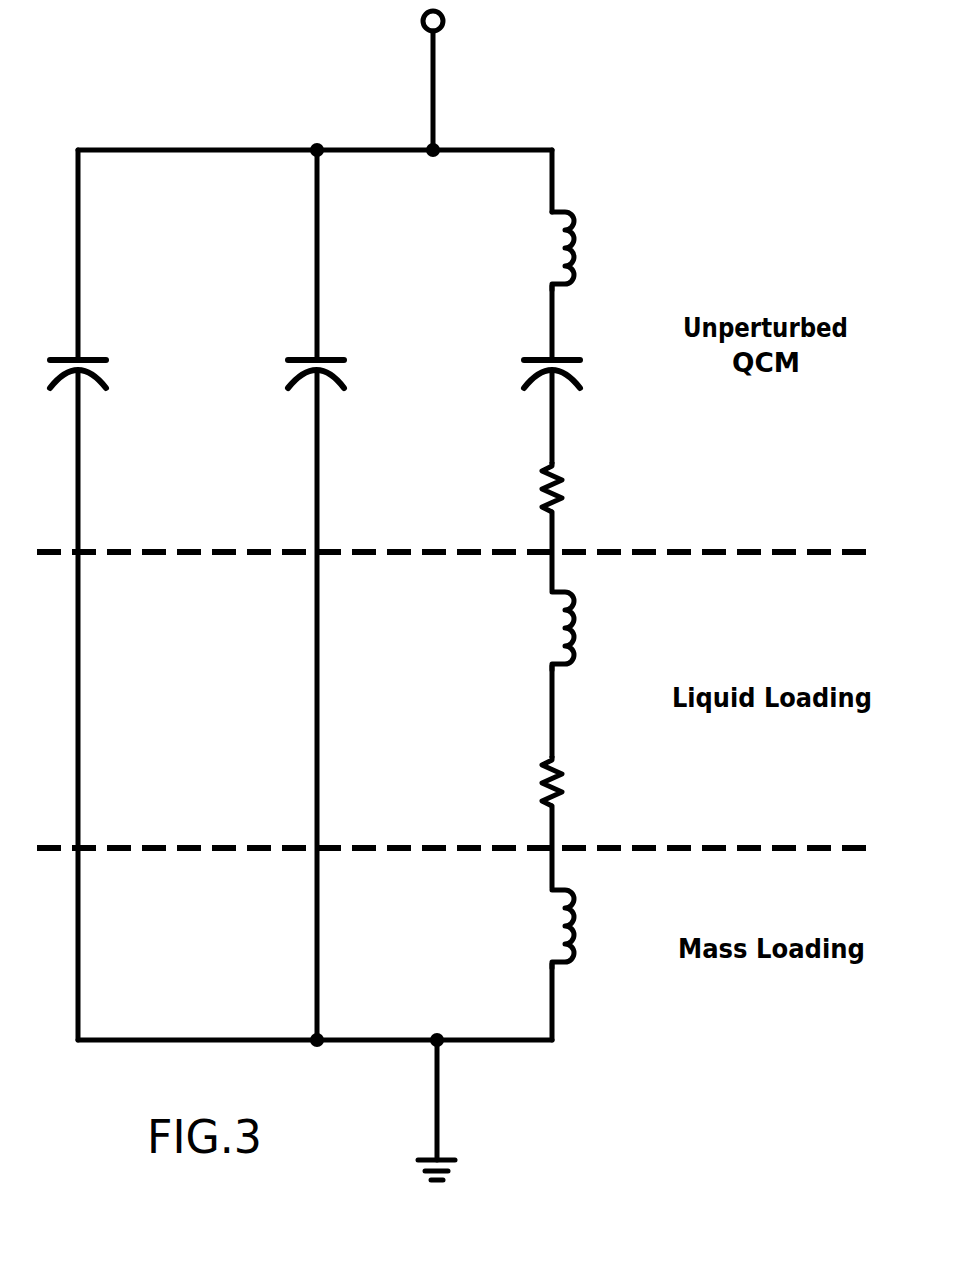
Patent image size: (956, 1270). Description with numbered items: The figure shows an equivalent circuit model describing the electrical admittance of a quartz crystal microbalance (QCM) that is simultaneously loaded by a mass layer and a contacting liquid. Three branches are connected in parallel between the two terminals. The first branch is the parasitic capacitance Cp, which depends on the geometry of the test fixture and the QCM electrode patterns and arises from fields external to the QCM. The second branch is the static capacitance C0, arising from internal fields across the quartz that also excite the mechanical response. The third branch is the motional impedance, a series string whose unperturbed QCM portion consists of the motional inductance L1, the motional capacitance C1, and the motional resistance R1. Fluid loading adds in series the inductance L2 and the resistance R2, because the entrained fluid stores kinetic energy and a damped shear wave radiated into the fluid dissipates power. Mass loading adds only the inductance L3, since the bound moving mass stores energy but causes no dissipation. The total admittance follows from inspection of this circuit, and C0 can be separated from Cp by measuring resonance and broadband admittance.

The parasitic capacitance Cp is at (103, 372).
The static capacitance C0 is at (341, 373).
The motional inductance of the unperturbed QCM L1 is at (591, 251).
The motional capacitance of the unperturbed QCM C1 is at (578, 371).
The motional resistance of the unperturbed QCM R1 is at (588, 487).
The liquid-loading motional inductance L2 is at (591, 631).
The liquid-loading motional resistance R2 is at (588, 781).
The mass-loading motional inductance L3 is at (591, 929).